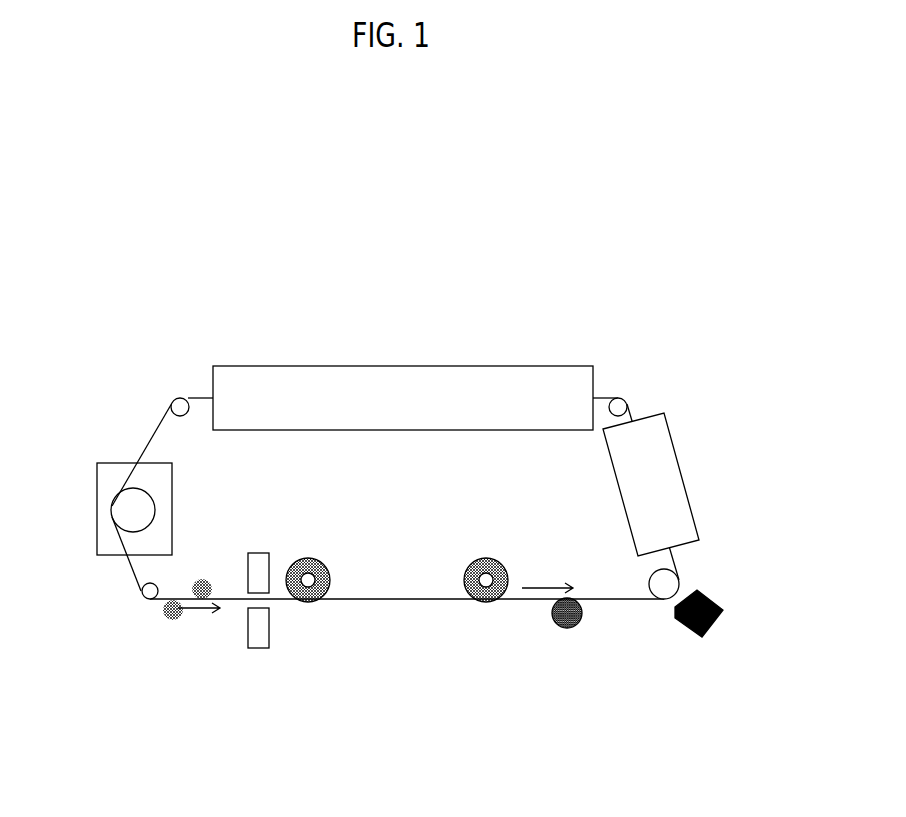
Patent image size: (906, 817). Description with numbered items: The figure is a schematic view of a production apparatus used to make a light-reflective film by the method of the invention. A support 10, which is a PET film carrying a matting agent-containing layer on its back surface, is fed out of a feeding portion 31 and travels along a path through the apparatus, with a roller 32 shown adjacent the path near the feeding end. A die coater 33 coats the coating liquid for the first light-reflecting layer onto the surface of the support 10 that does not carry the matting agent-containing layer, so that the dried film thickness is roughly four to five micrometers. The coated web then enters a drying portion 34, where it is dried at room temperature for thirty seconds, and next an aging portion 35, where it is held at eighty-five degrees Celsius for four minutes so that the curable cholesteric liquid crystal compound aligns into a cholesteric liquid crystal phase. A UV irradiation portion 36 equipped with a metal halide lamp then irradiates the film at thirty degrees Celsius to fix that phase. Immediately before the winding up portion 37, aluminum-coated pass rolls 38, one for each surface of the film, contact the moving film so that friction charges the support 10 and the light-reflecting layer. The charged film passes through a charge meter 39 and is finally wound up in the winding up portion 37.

The support 10 is at (608, 600).
The feeding portion 31 is at (464, 582).
The second roller 32 is at (555, 624).
The die coater 33 is at (717, 605).
The drying portion 34 is at (677, 445).
The aging portion 35 is at (472, 366).
The UV irradiation portion 36 is at (97, 462).
The winding up portion 37 is at (328, 568).
The aluminum-coated pass rolls 38 is at (201, 577).
The charge meter 39 is at (270, 553).